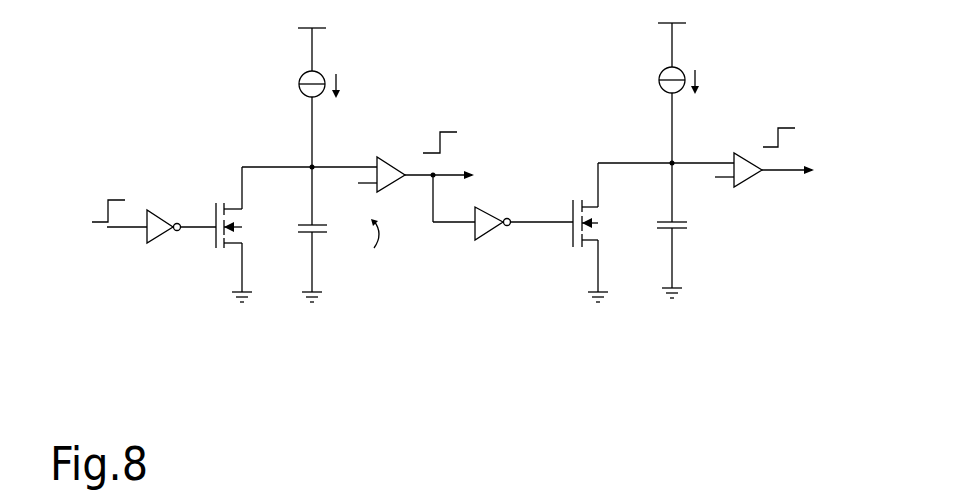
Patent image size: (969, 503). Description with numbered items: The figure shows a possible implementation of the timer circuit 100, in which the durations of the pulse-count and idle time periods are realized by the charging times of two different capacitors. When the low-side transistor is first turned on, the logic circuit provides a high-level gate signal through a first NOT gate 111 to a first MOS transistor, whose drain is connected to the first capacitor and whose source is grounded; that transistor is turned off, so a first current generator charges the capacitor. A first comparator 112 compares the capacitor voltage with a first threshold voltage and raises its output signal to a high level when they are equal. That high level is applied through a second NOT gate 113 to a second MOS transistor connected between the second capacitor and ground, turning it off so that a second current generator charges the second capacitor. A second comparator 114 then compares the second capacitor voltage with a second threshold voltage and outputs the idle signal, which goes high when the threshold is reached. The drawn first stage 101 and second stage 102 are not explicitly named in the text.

The timer circuit 100 is at (256, 76).
The transistor M1 (reset switch) 101 is at (205, 167).
The idle detection circuit 102 is at (580, 104).
The NOT gate 111 is at (162, 239).
The comparator 112 is at (394, 163).
The NOT gate 113 is at (494, 206).
The comparator 114 is at (749, 181).